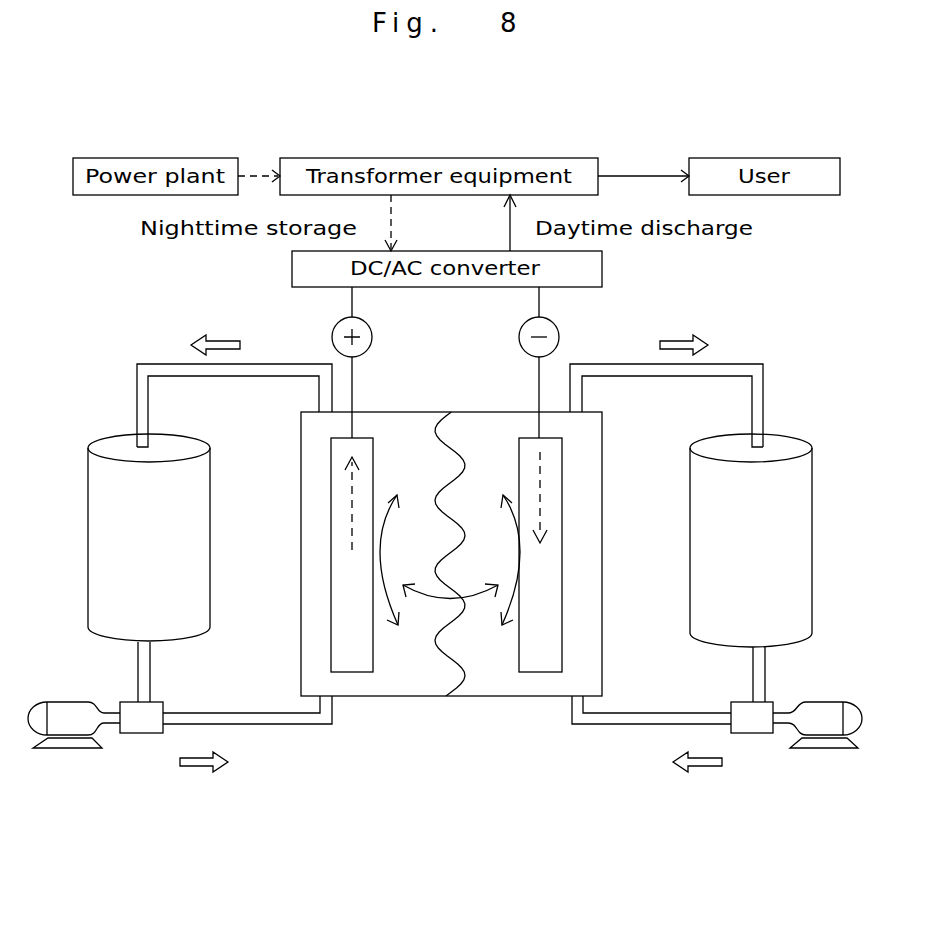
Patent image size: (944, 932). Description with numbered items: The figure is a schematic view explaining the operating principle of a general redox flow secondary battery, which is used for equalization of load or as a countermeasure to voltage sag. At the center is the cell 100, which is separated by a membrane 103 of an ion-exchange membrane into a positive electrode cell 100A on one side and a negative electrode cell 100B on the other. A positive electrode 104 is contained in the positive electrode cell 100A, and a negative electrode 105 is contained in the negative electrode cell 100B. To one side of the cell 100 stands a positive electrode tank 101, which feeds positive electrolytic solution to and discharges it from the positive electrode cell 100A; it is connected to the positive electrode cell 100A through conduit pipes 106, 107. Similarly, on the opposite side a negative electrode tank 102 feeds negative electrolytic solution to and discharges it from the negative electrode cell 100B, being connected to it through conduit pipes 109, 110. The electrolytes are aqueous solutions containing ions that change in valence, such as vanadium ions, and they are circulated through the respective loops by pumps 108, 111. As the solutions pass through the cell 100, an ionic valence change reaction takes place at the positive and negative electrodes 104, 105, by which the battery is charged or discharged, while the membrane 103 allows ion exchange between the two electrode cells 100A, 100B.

The cell 100 is at (432, 408).
The positive electrode cell 100A is at (390, 696).
The negative electrode cell 100B is at (520, 696).
The positive electrode tank 101 is at (101, 445).
The negative electrode tank 102 is at (797, 443).
The membrane 103 is at (455, 690).
The positive electrode 104 is at (343, 672).
The negative electrode 105 is at (543, 672).
The conduit pipe 106 is at (287, 725).
The conduit pipe 107 is at (163, 362).
The pump 108 is at (73, 749).
The conduit pipe 109 is at (628, 725).
The conduit pipe 110 is at (745, 362).
The pump 111 is at (820, 749).